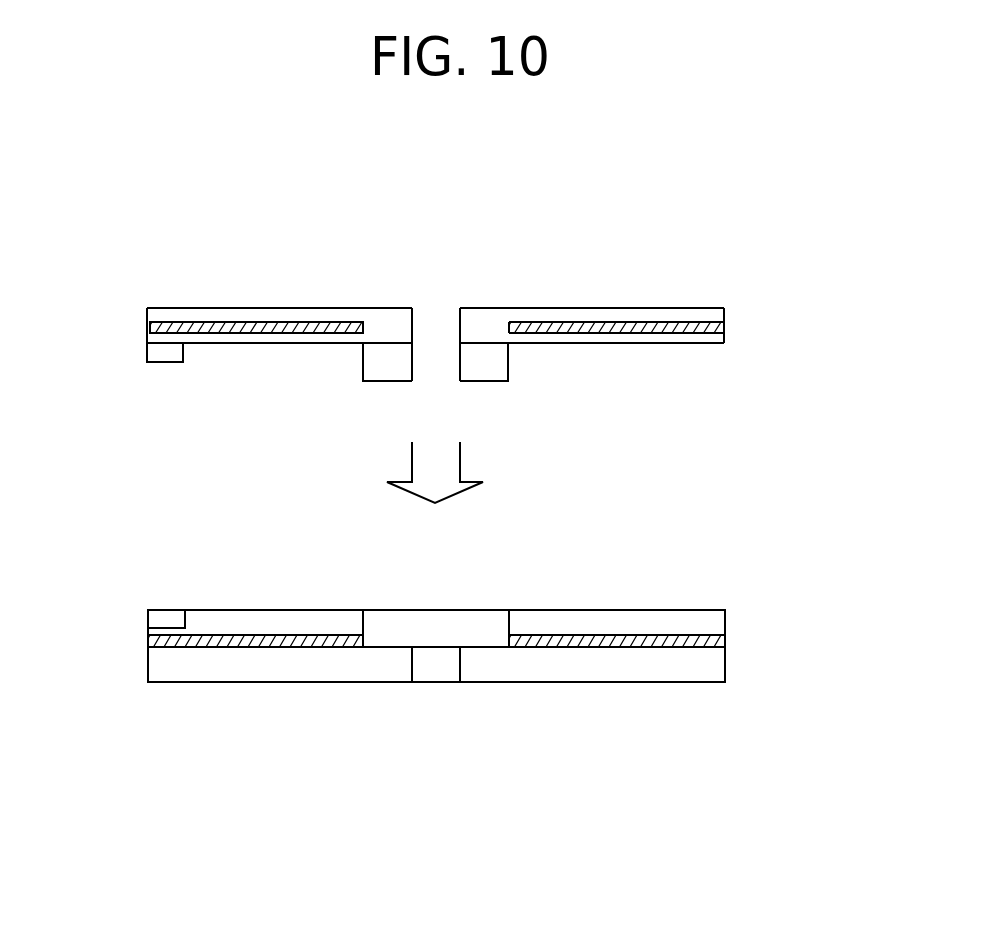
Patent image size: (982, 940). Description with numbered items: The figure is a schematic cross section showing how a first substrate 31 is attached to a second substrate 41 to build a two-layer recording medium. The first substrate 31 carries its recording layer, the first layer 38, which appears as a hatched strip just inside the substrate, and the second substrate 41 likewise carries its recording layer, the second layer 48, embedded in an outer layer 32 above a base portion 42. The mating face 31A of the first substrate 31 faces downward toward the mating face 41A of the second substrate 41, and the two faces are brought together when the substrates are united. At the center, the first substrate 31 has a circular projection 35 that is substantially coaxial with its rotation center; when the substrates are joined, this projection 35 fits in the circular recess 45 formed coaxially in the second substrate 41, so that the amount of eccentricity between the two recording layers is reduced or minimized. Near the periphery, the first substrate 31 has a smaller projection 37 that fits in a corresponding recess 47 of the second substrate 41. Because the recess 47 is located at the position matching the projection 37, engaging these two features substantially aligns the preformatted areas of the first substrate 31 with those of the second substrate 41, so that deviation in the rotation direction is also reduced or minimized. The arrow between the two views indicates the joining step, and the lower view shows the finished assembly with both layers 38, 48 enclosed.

The first substrate 31 is at (210, 265).
The mating face of the first substrate 31A is at (700, 347).
The wiring layer 32 is at (724, 308).
The circular projection 35 is at (363, 362).
The projection 37 is at (147, 350).
The first layer 38 is at (724, 327).
The second substrate 41 is at (210, 730).
The mating face of the second substrate 41A is at (692, 610).
The base substrate 42 is at (725, 672).
The circular recess 45 is at (385, 617).
The recess 47 is at (148, 617).
The second layer 48 is at (725, 637).